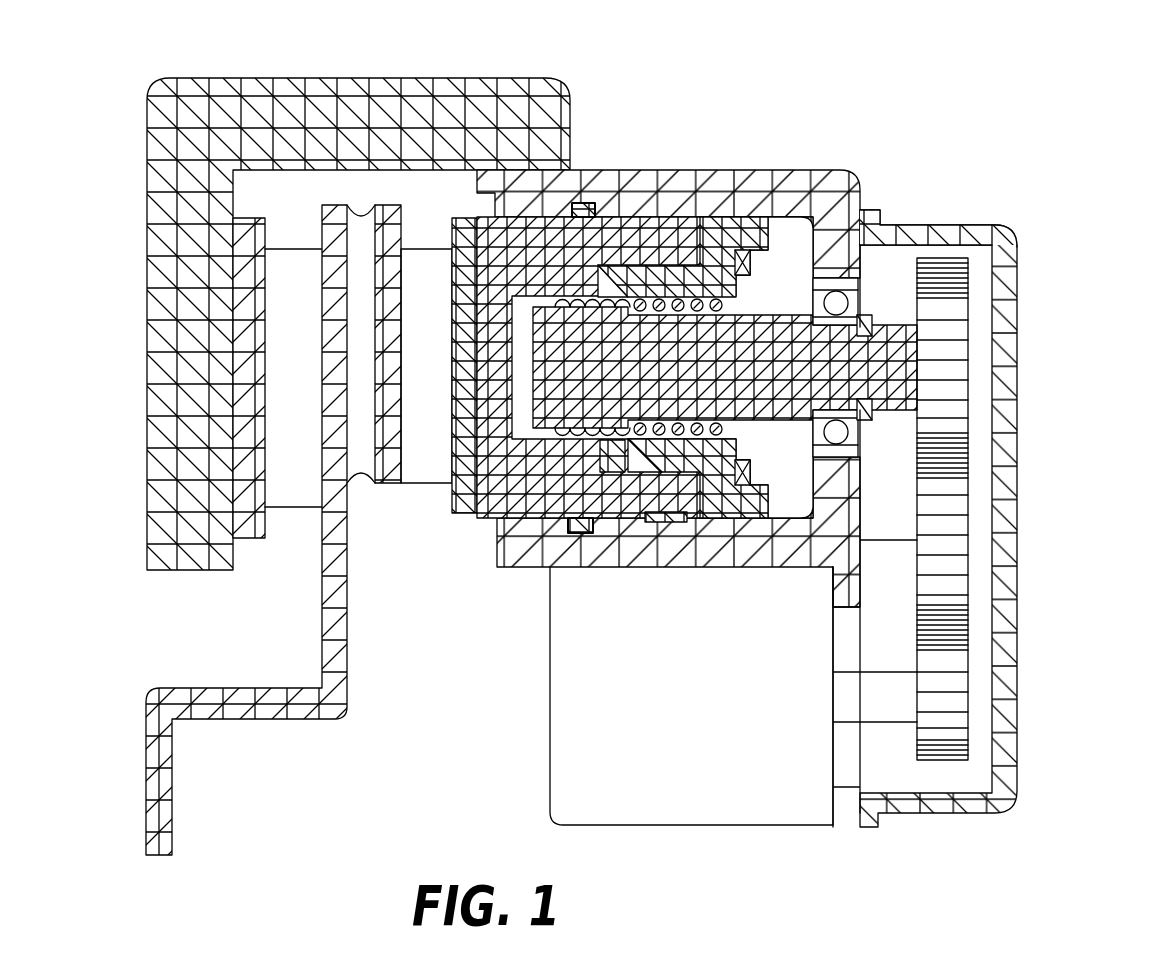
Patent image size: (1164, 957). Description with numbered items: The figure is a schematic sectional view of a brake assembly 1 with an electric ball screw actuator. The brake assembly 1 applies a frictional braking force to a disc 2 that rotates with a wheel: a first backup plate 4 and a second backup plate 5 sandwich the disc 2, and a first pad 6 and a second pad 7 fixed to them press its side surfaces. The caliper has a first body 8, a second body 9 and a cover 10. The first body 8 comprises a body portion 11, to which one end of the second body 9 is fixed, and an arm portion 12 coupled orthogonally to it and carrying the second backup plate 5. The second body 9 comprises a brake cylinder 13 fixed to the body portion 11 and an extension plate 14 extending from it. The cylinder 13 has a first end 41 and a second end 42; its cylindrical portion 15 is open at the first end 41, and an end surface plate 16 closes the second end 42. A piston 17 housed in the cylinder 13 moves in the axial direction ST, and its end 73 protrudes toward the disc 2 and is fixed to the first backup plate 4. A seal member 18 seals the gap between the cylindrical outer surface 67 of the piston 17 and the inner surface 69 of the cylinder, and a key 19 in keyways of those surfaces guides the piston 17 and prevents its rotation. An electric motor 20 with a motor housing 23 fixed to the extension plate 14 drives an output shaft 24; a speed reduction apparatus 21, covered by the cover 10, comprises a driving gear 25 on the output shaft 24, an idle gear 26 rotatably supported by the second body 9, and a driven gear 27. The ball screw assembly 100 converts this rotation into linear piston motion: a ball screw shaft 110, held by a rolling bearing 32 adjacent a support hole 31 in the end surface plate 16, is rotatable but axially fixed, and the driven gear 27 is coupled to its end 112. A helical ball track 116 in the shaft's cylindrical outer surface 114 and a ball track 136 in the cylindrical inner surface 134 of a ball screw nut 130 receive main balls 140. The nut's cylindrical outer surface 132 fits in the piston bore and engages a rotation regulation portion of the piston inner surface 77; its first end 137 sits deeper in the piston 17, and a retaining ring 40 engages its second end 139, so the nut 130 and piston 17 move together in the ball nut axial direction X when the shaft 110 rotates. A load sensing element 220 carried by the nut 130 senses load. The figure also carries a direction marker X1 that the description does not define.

The brake assembly 1 is at (908, 184).
The disc 2 is at (360, 214).
The first backup plate 4 is at (470, 232).
The second backup plate 5 is at (247, 215).
The first pad 6 is at (433, 256).
The second pad 7 is at (290, 268).
The first body 8 is at (383, 72).
The second body 9 is at (543, 72).
The cover 10 is at (965, 232).
The body portion 11 is at (287, 92).
The arm portion 12 is at (162, 484).
The brake cylinder 13 is at (768, 158).
The extension plate 14 is at (848, 828).
The cylindrical portion 15 is at (677, 185).
The end surface plate 16 is at (861, 218).
The piston 17 is at (612, 206).
The seal member 18 is at (583, 533).
The key 19 is at (670, 523).
The electric motor 20 is at (725, 836).
The speed reduction apparatus 21 is at (985, 472).
The motor housing 23 is at (580, 826).
The output shaft 24 is at (870, 697).
The driving gear 25 is at (953, 705).
The idle gear 26 is at (953, 600).
The driven gear 27 is at (980, 413).
The support hole 31 is at (850, 452).
The rolling bearing 32 is at (845, 298).
The retaining ring 40 is at (742, 470).
The first end 41 is at (571, 131).
The second end 42 is at (822, 177).
The cylindrical outer surface 67 is at (655, 522).
The inner surface 69 is at (613, 512).
The end 73 is at (483, 482).
The inner surface 77 is at (565, 432).
The ball screw assembly 100 is at (713, 473).
The ball screw shaft 110 is at (840, 252).
The end 112 is at (880, 326).
The cylindrical outer surface 114 is at (553, 432).
The ball track 116 is at (598, 442).
The ball screw nut 130 is at (720, 266).
The cylindrical outer surface 132 is at (690, 265).
The cylindrical inner surface 134 is at (733, 430).
The ball track 136 is at (693, 428).
The first end 137 is at (618, 272).
The second end 139 is at (792, 305).
The main balls 140 is at (736, 294).
The load sensing element 220 is at (618, 484).
The axial direction ST is at (1048, 326).
The ball nut axial direction X is at (1048, 356).
The axial direction X1 is at (225, 836).